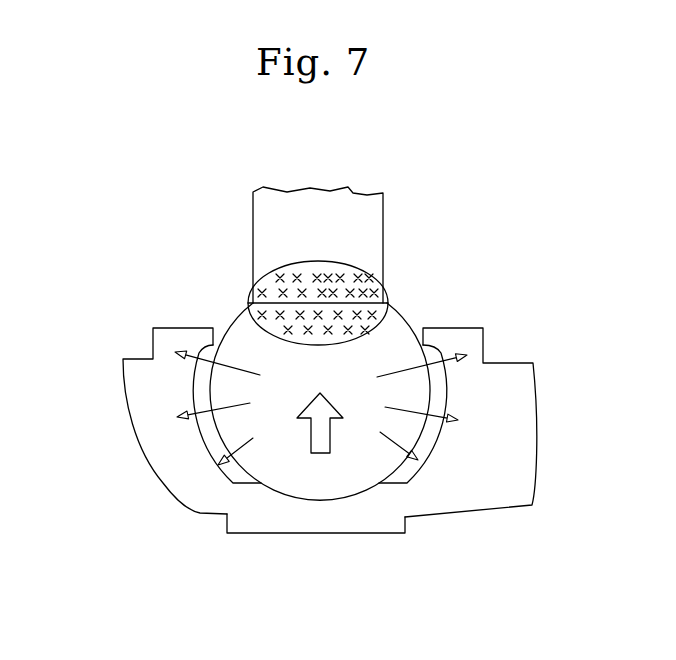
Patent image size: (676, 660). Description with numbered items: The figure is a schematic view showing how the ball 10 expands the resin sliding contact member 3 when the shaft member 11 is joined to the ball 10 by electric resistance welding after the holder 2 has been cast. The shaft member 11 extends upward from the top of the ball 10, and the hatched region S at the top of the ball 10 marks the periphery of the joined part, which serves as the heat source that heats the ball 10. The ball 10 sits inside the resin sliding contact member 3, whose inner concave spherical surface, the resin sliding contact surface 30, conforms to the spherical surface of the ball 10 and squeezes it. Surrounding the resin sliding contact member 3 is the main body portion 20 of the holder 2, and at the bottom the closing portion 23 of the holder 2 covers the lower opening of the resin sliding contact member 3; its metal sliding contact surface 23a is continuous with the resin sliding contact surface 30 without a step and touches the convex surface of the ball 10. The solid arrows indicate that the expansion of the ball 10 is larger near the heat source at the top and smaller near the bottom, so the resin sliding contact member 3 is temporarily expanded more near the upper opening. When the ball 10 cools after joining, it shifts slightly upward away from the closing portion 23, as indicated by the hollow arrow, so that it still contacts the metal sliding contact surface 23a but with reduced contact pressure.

The holder 2 is at (168, 507).
The resin sliding contact member 3 is at (200, 385).
The ball 10 is at (393, 330).
The shaft member 11 is at (263, 227).
The main body portion 20 is at (143, 423).
The closing portion 23 is at (367, 523).
The metal sliding contact surface 23a is at (287, 490).
The resin sliding contact surface 30 is at (216, 434).
The space S is at (368, 273).